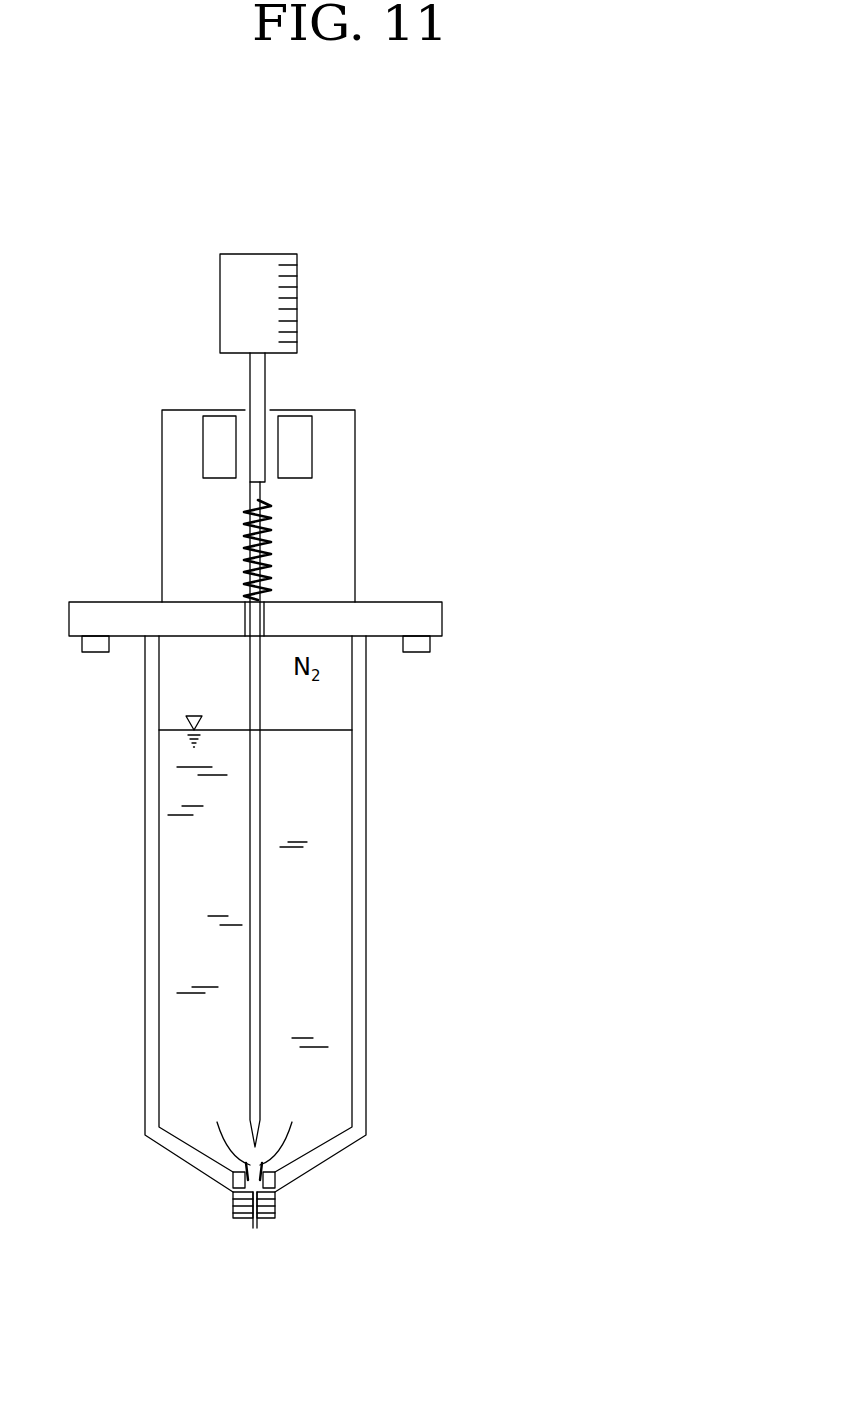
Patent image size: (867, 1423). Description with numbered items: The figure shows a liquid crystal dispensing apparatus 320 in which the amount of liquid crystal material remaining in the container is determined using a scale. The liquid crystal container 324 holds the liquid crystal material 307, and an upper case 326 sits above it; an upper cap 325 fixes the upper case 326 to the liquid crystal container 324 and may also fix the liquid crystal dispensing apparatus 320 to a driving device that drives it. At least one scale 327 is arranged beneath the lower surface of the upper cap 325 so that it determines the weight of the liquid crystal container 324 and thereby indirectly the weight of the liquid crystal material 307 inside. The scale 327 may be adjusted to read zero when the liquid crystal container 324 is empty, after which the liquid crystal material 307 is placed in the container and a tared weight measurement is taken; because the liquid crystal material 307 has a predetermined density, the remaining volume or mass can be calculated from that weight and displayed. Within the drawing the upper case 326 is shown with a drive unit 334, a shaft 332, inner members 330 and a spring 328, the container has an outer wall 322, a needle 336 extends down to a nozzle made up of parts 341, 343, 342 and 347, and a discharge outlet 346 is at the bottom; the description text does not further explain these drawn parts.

The liquid crystal dispensing apparatus 320 is at (352, 302).
The driving motor 334 is at (237, 296).
The drive shaft 332 is at (265, 386).
The upper case 326 is at (355, 450).
The coil / guide 330 is at (218, 452).
The spring 328 is at (250, 530).
The upper cap 325 is at (442, 618).
The scale 327 is at (425, 645).
The outer container wall 322 is at (367, 803).
The liquid crystal container 324 is at (352, 897).
The liquid crystal material 307 is at (180, 876).
The needle 336 is at (260, 988).
The nozzle upper part 341 is at (232, 1178).
The nozzle upper part 343 is at (273, 1193).
The nozzle body 342 is at (232, 1203).
The nozzle body 347 is at (275, 1215).
The discharge hole 346 is at (253, 1228).